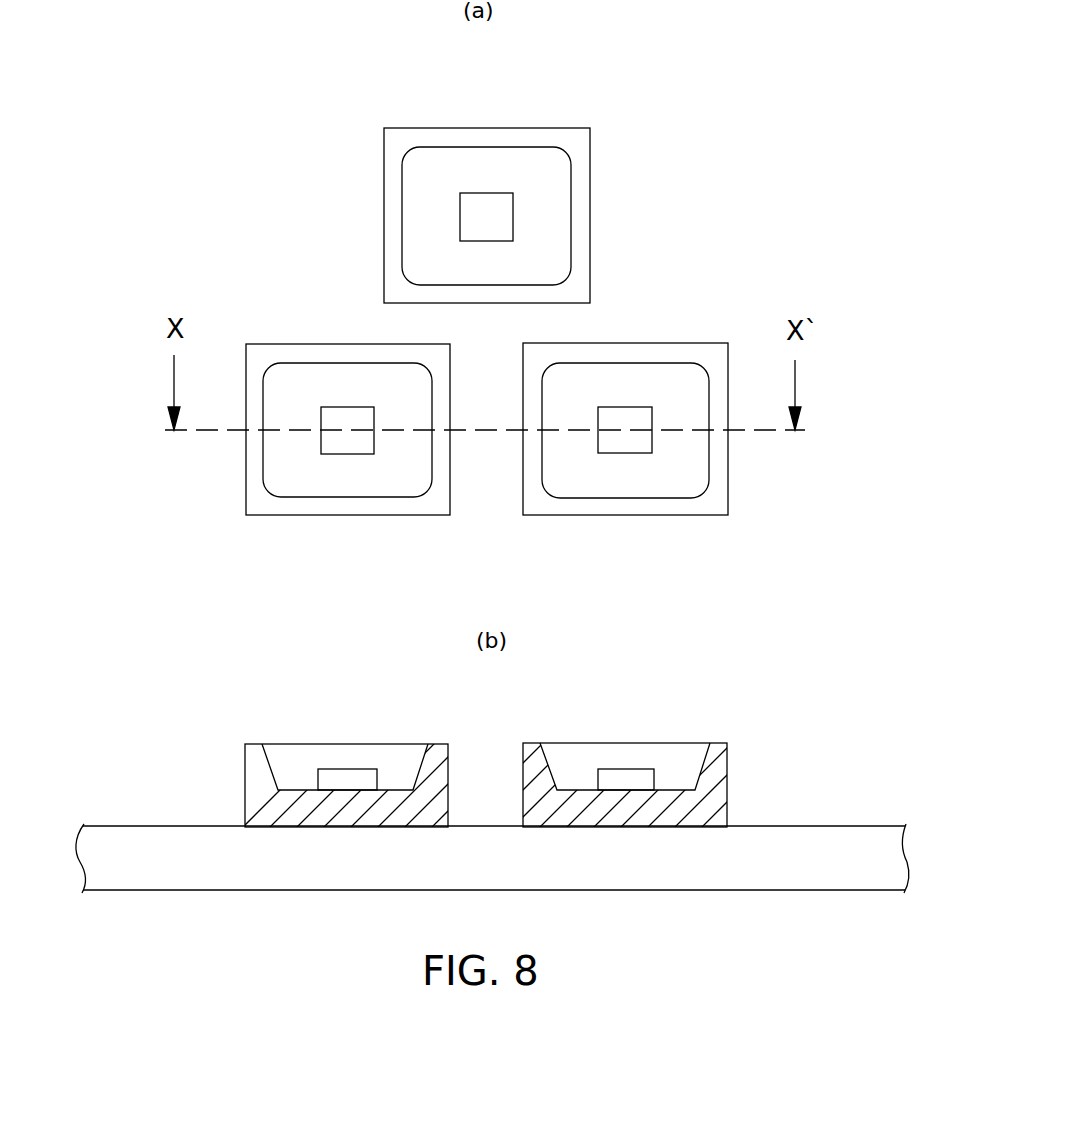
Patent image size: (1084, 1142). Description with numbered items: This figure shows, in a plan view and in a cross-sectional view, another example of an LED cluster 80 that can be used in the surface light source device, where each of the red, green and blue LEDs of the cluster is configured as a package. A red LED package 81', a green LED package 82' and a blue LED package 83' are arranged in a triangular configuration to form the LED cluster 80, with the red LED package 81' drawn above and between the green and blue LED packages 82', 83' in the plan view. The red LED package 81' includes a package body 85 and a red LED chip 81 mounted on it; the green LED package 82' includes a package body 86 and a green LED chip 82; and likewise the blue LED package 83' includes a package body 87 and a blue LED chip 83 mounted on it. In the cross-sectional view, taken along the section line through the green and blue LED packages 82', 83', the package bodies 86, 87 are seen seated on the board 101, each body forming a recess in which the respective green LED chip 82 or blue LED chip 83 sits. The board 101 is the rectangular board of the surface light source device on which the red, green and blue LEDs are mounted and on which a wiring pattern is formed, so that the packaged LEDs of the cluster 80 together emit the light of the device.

The LED cluster 80 is at (493, 61).
The red LED chip 81 is at (479, 162).
The green LED chip 82 is at (333, 598).
The blue LED chip 83 is at (616, 598).
The red LED package 81' is at (553, 172).
The green LED package 82' is at (488, 528).
The blue LED package 83' is at (537, 534).
The package body 85 is at (583, 230).
The package body 86 is at (403, 508).
The package body 87 is at (715, 500).
The board 101 is at (880, 843).